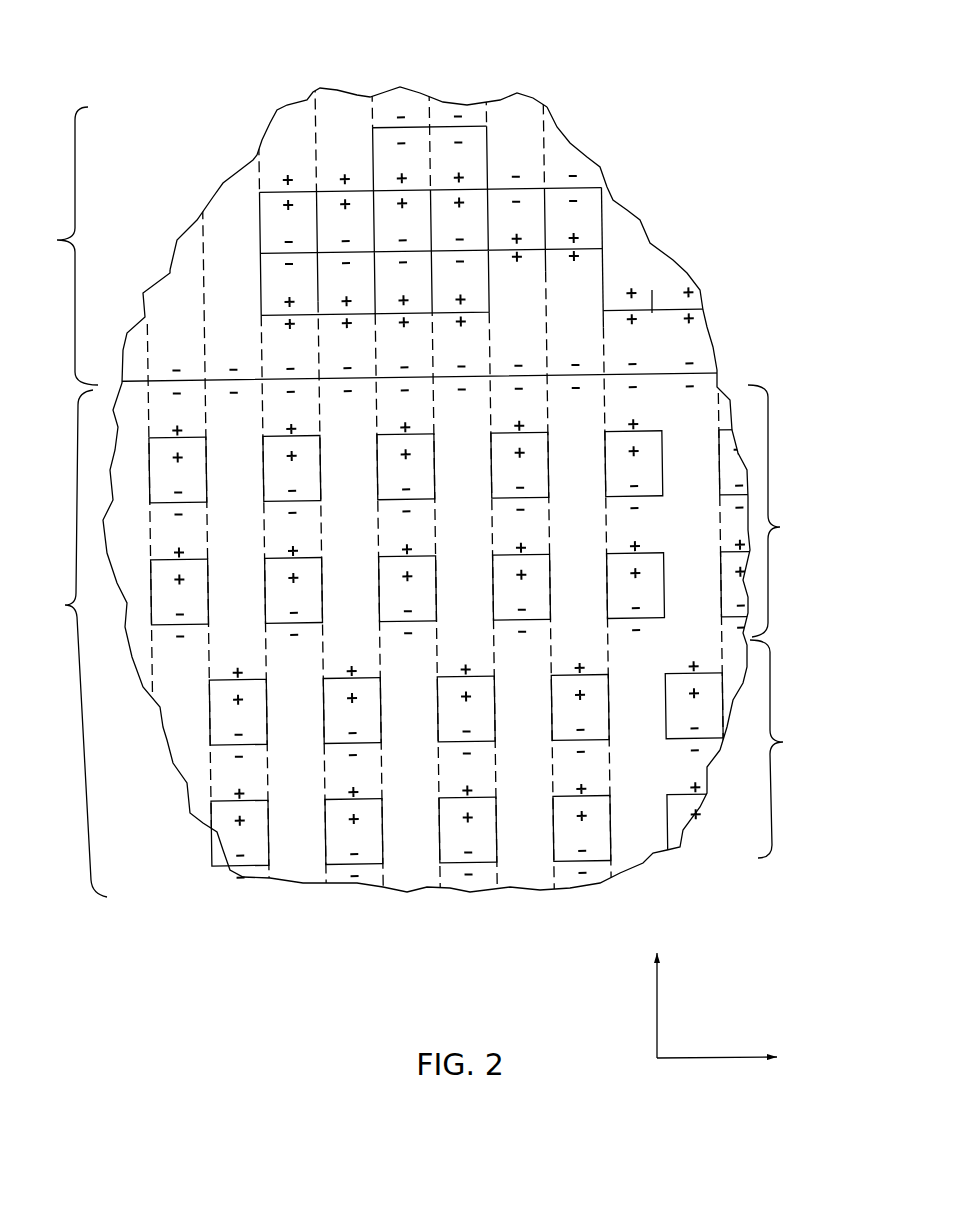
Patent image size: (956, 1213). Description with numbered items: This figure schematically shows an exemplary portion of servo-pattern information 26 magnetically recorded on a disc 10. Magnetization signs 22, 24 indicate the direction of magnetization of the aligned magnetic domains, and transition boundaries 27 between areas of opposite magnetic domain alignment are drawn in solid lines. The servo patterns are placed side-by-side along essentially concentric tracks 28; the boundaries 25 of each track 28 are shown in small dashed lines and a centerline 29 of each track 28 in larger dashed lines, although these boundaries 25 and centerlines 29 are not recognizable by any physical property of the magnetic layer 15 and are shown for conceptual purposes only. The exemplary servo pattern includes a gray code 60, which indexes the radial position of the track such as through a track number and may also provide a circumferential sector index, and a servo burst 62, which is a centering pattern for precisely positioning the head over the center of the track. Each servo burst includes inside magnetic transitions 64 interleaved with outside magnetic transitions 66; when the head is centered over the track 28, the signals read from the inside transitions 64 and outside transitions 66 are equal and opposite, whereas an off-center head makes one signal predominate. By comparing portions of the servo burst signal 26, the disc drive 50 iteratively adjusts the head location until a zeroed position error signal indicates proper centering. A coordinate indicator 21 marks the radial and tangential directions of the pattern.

The disc 10 is at (167, 975).
The magnetic layer 15 is at (703, 96).
The coordinate system 21 is at (657, 1010).
The magnetization sign 22 is at (692, 664).
The magnetization sign 24 is at (687, 364).
The track boundaries 25 is at (606, 223).
The servo-pattern information 26 is at (753, 302).
The transition boundaries 27 is at (441, 127).
The tracks 28 is at (343, 70).
The centerline 29 is at (553, 190).
The disc drive 50 is at (572, 233).
The gray code 60 is at (314, 246).
The servo burst 62 is at (363, 641).
The inside magnetic transitions 64 is at (481, 511).
The outside magnetic transitions 66 is at (514, 759).